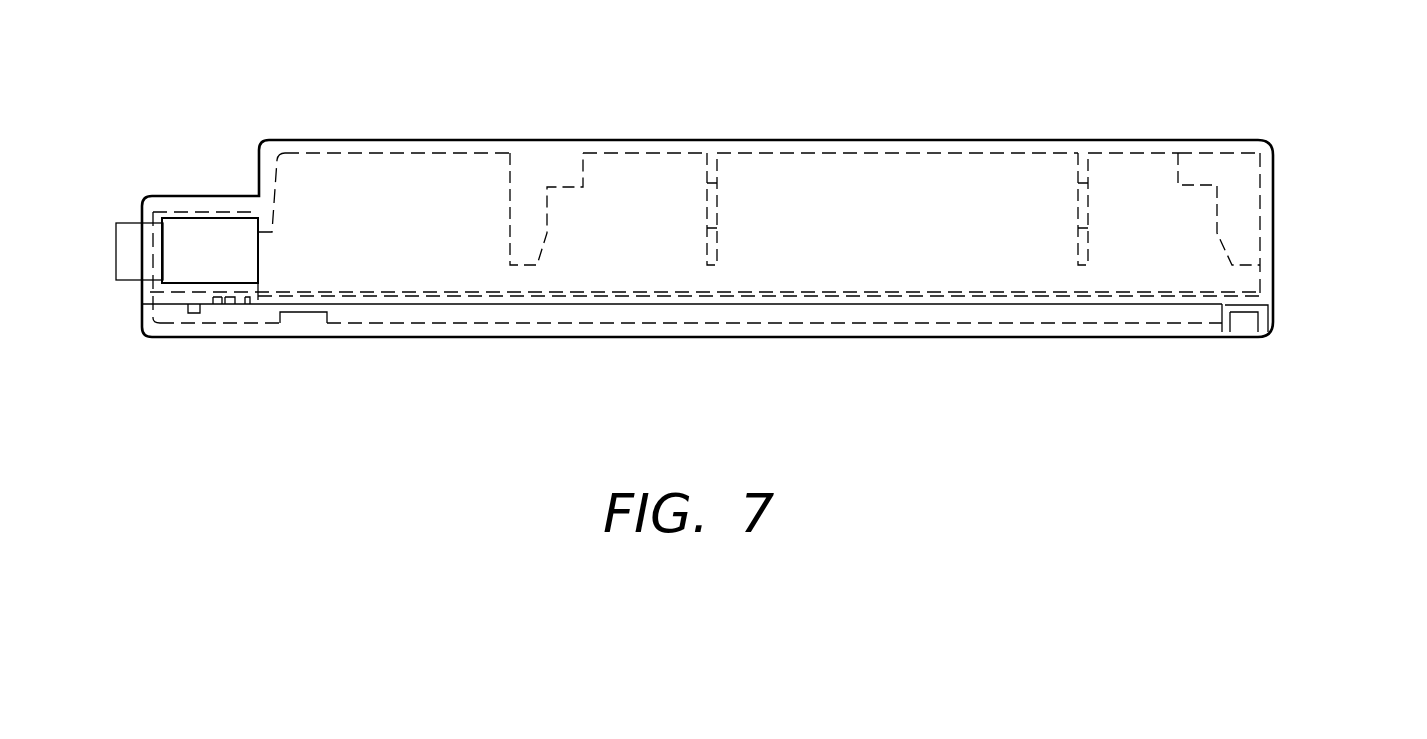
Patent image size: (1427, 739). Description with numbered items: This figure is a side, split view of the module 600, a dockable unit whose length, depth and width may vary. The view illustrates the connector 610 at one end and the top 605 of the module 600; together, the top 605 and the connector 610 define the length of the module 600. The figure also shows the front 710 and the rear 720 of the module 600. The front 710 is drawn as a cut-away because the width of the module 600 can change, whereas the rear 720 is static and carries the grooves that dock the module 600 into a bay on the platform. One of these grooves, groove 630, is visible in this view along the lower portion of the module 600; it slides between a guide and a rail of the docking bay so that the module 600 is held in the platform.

The module 600 is at (1302, 289).
The top 605 is at (1273, 242).
The connector 610 is at (130, 242).
The groove 630 is at (840, 323).
The frontside 710 is at (883, 140).
The rear side 720 is at (1080, 333).